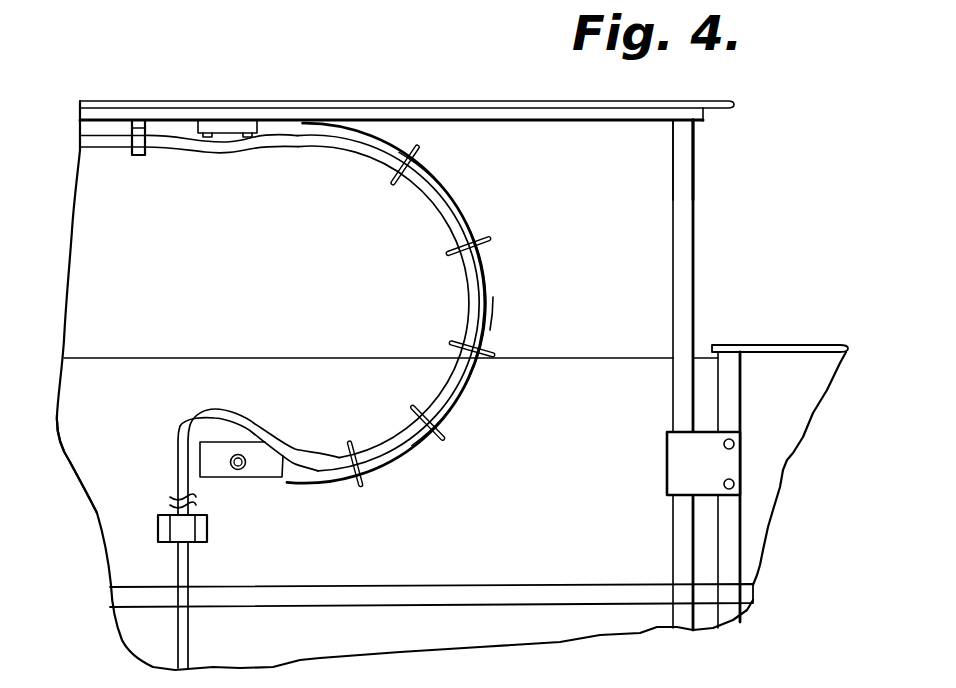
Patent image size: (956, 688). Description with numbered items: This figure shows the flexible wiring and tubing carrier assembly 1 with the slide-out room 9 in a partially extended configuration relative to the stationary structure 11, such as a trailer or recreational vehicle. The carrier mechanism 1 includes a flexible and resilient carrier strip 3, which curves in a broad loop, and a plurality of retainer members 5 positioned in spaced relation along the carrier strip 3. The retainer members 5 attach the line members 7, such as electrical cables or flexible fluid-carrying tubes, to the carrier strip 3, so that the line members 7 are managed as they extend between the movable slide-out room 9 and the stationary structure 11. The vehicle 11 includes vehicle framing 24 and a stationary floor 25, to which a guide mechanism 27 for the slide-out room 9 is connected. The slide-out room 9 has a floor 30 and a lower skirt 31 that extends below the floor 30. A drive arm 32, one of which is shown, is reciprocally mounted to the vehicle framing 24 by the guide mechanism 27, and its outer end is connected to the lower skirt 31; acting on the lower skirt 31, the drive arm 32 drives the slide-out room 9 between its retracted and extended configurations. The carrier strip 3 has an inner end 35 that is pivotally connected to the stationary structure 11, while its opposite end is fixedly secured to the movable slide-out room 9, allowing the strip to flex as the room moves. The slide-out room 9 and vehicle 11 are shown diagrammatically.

The flexible wiring and tubing carrier assembly 1 is at (494, 298).
The carrier strip 3 is at (473, 393).
The retainer members 5 is at (445, 440).
The line members 7 is at (477, 233).
The slide-out room 9 is at (698, 144).
The stationary structure 11 is at (78, 432).
The vehicle framing 24 is at (478, 586).
The stationary floor 25 is at (110, 360).
The guide mechanism 27 is at (715, 465).
The floor 30 is at (90, 196).
The lower skirt 31 is at (418, 116).
The drive arms 32 is at (688, 222).
The inner end 35 is at (300, 482).